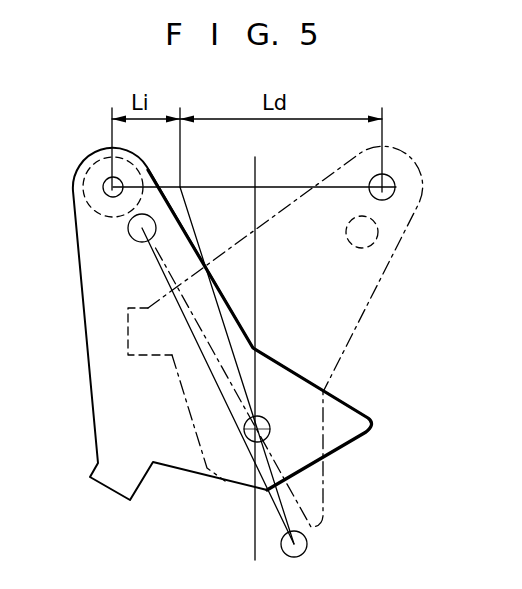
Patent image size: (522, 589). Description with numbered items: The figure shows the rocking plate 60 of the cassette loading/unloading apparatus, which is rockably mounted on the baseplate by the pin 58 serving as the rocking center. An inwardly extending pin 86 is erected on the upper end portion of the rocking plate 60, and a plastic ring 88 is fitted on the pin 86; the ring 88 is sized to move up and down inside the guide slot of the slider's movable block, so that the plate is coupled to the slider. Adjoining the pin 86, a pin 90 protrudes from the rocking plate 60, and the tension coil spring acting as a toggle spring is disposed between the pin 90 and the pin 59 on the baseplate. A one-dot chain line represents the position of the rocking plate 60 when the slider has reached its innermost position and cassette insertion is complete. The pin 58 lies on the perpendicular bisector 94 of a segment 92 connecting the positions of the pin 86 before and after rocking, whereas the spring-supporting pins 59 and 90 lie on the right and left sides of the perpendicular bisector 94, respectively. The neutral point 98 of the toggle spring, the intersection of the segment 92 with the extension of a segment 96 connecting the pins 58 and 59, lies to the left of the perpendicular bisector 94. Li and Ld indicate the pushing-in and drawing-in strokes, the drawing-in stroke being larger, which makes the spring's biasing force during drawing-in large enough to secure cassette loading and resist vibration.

The pin 58 is at (270, 427).
The pin 59 is at (307, 548).
The rocking plate 60 is at (97, 419).
The pin 86 is at (106, 198).
The plastic ring 88 is at (89, 197).
The pin 90 is at (133, 242).
The segment 92 is at (270, 187).
The perpendicular bisector 94 is at (256, 272).
The segment 96 is at (273, 468).
The neutral point 98 is at (184, 190).